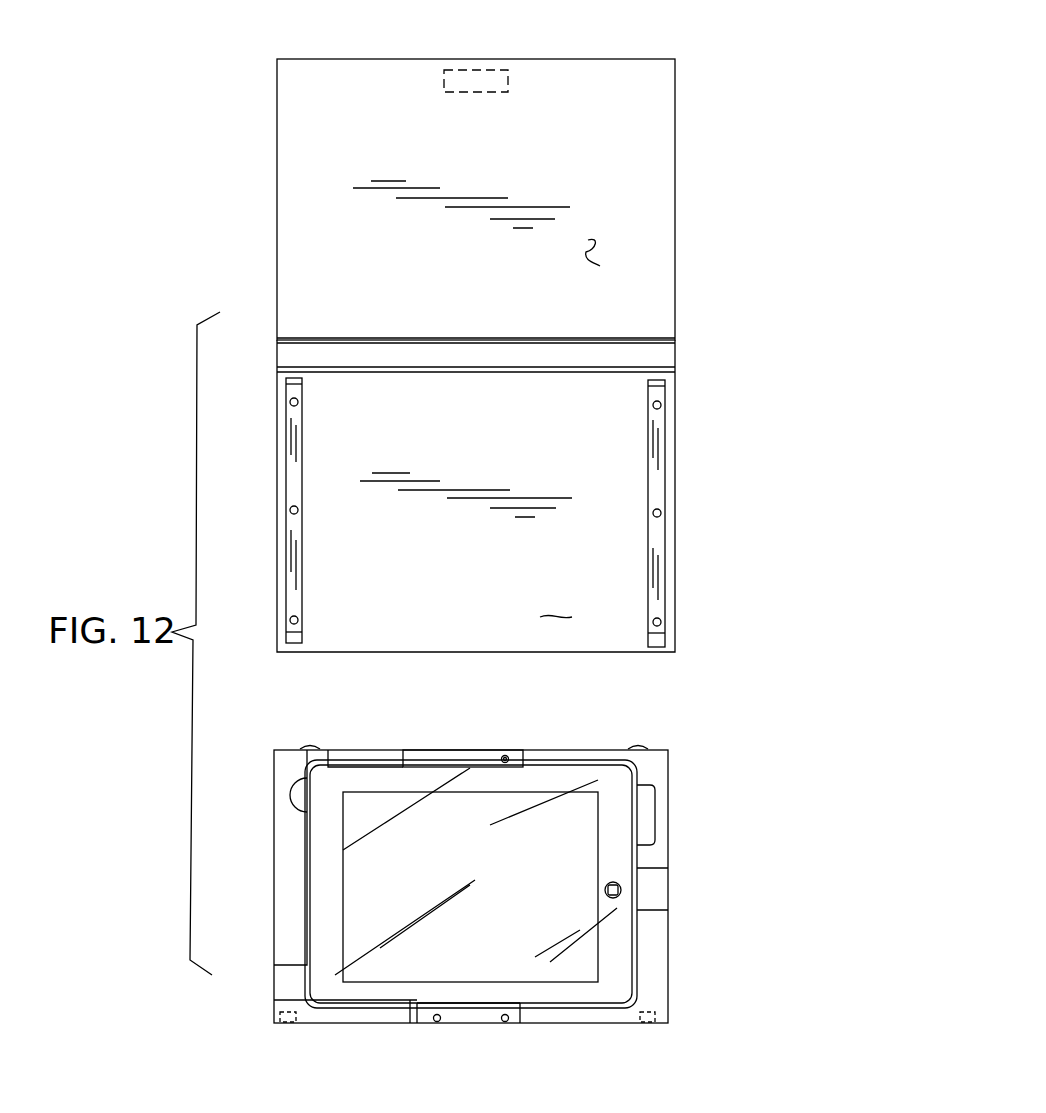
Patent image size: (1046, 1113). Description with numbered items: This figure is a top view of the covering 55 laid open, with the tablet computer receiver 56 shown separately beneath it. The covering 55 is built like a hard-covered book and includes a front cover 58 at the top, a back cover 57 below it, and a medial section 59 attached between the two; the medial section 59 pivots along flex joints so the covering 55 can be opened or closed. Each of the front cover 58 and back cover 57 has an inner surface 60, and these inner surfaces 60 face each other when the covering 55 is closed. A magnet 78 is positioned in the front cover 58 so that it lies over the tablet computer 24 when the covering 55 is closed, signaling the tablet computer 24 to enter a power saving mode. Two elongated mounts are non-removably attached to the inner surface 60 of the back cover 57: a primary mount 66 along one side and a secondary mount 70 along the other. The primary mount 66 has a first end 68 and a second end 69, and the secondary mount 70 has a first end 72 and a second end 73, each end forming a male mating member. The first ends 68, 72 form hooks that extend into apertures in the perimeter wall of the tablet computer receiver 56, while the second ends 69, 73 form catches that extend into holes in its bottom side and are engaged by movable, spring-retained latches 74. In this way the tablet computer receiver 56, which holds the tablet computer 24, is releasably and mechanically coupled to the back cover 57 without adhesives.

The tablet computer 24 is at (620, 975).
The covering 55 is at (683, 329).
The tablet computer receiver 56 is at (670, 750).
The back cover 57 is at (676, 548).
The front cover 58 is at (676, 200).
The medial section 59 is at (655, 350).
The inner surface 60 is at (600, 252).
The primary mount 66 is at (658, 452).
The first end 68 is at (660, 640).
The second end 69 is at (668, 384).
The secondary mount 70 is at (298, 468).
The first end 72 is at (293, 644).
The second end 73 is at (290, 380).
The latch 74 is at (318, 748).
The magnet 78 is at (484, 70).